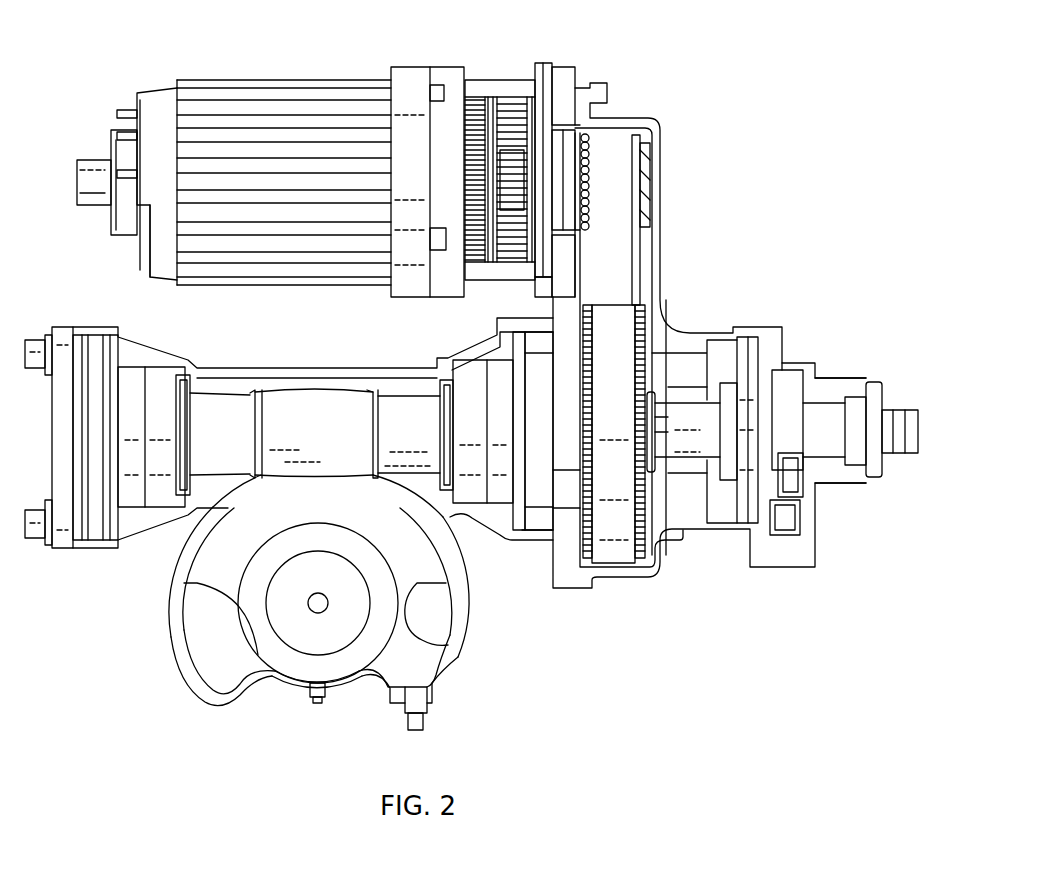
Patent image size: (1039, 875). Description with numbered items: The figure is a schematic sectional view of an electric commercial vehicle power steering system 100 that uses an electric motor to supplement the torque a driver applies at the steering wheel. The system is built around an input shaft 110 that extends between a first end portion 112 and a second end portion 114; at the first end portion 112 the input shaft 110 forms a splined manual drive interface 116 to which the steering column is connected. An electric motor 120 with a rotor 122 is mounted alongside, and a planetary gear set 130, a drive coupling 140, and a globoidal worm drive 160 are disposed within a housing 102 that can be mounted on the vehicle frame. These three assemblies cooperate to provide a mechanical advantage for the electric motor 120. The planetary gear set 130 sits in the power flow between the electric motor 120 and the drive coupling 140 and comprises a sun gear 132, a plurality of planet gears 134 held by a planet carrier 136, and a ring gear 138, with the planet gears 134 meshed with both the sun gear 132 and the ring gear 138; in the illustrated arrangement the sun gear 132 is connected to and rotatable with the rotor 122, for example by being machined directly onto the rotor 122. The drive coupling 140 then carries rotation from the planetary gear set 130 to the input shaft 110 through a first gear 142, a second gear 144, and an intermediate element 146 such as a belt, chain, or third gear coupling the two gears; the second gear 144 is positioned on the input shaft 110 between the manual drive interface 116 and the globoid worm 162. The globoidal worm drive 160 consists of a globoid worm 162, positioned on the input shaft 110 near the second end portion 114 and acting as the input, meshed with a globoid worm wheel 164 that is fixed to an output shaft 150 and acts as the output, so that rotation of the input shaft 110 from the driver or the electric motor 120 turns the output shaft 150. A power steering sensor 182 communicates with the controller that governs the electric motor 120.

The electric commercial vehicle power steering system 100 is at (484, 391).
The housing 102 is at (217, 368).
The input shaft 110 is at (690, 440).
The first end portion 112 is at (831, 456).
The second end portion 114 is at (149, 509).
The manual drive interface 116 is at (908, 428).
The electric motor 120 is at (322, 80).
The rotor 122 is at (488, 150).
The planetary gear set 130 is at (507, 168).
The sun gear 132 is at (517, 178).
The planet gears 134 is at (513, 127).
The planet carrier 136 is at (660, 143).
The ring gear 138 is at (513, 255).
The drive coupling 140 is at (640, 276).
The first gear 142 is at (641, 184).
The second gear 144 is at (668, 406).
The intermediate element 146 is at (620, 312).
The output shaft 150 is at (293, 625).
The globoidal worm drive 160 is at (384, 462).
The globoid worm 162 is at (307, 412).
The globoid worm wheel 164 is at (357, 624).
The power steering sensor 182 is at (785, 518).